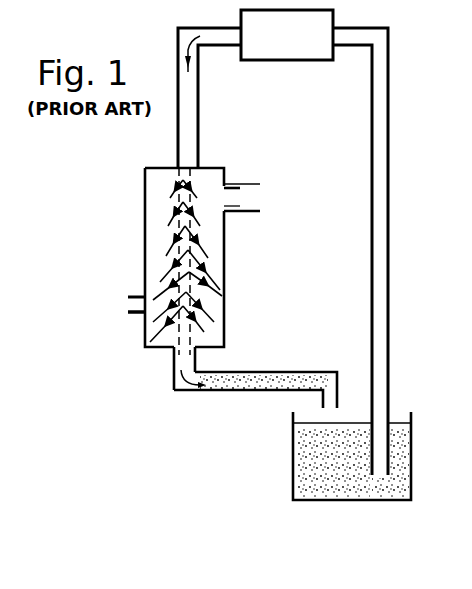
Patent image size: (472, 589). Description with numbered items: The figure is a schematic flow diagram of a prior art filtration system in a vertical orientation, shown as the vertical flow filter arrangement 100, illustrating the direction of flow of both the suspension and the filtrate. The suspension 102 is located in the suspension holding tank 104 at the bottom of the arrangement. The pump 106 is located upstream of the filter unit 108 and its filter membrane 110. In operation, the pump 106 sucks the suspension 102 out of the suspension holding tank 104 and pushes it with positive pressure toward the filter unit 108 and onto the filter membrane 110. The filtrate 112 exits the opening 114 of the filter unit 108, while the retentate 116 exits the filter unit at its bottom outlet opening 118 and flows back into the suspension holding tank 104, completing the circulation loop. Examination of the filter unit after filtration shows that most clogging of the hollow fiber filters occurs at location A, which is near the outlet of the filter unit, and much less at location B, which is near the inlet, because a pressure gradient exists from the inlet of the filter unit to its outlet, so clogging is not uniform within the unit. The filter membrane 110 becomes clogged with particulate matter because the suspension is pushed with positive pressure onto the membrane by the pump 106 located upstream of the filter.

The vertical flow filter arrangement 100 is at (398, 174).
The suspension 102 is at (332, 477).
The suspension holding tank 104 is at (293, 478).
The pump 106 is at (330, 52).
The filter unit 108 is at (228, 270).
The filter membrane 110 is at (192, 283).
The filtrate 112 is at (160, 300).
The opening 114 is at (128, 313).
The retentate 116 is at (288, 385).
The bottom outlet opening 118 is at (187, 362).
The location A is at (150, 346).
The location B is at (177, 187).